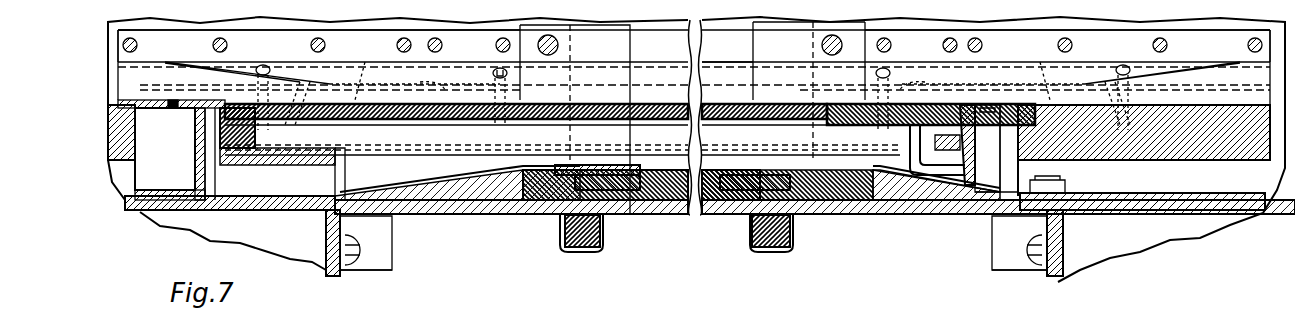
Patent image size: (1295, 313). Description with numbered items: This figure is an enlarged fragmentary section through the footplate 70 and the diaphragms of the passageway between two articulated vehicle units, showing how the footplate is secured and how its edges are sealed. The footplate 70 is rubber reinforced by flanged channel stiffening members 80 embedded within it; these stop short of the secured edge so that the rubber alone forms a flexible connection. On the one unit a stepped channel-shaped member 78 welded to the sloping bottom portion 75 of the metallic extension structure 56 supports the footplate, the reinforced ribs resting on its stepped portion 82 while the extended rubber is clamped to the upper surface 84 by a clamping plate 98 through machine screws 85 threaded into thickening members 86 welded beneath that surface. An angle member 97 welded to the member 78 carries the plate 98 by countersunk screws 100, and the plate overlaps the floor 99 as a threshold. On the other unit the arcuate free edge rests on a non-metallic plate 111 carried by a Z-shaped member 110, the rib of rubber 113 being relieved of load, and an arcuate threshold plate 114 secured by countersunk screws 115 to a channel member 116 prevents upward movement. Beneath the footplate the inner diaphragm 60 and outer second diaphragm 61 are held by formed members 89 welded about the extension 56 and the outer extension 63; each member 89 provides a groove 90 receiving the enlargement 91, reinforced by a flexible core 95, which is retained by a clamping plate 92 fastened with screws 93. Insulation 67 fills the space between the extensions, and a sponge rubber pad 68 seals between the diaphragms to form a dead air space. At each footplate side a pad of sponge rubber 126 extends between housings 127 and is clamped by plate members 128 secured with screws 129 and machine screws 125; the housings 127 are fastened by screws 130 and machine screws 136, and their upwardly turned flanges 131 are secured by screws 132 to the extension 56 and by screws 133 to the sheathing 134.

The metallic extension structure 56 is at (694, 260).
The diaphragm 60 is at (686, 68).
The second diaphragm 61 is at (705, 214).
The metallic extension 63 is at (693, 290).
The insulation 67 is at (462, 214).
The sponge rubber pad 68 is at (672, 214).
The footplate 70 is at (618, 108).
The horizontal bottom portion 75 is at (443, 186).
The stepped channel-shaped member 78 is at (945, 214).
The flanged channel stiffening member 80 is at (670, 108).
The stepped portion 82 is at (888, 214).
The upper surface 84 is at (968, 105).
The machine screw 85 is at (955, 140).
The thickening member 86 is at (947, 156).
The formed member 89 is at (565, 240).
The groove 90 is at (563, 245).
The enlargement 91 is at (625, 172).
The clamping plate 92 is at (622, 48).
The screw 93 is at (558, 43).
The flexible core 95 is at (565, 168).
The angle member 97 is at (987, 168).
The clamping plate 98 is at (1015, 105).
The floor 99 is at (125, 150).
The countersunk screw 100 is at (991, 148).
The Z-shaped member 110 is at (335, 180).
The non-metallic plate 111 is at (252, 165).
The rib of rubber 113 is at (210, 133).
The arcuate threshold plate 114 is at (140, 100).
The countersunk screw 115 is at (170, 100).
The channel member 116 is at (195, 157).
The machine screw 125 is at (470, 88).
The pad of sponge rubber 126 is at (712, 82).
The housing 127 is at (222, 62).
The plate member 128 is at (706, 71).
The screw 129 is at (300, 82).
The screw 130 is at (265, 65).
The upwardly turned flange 131 is at (243, 38).
The screw 132 is at (496, 48).
The screw 133 is at (240, 46).
The sheathing 134 is at (186, 28).
The machine screw 136 is at (507, 75).